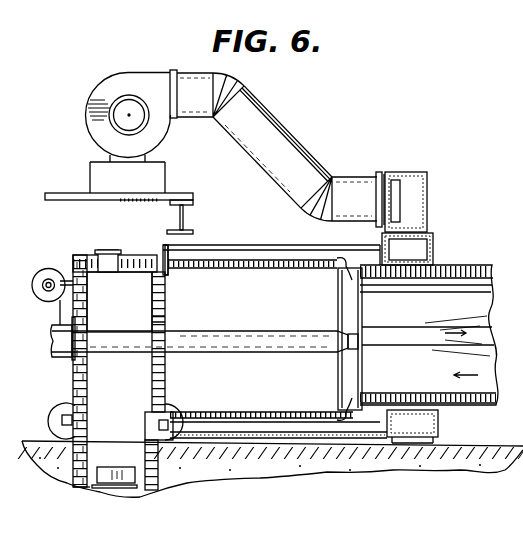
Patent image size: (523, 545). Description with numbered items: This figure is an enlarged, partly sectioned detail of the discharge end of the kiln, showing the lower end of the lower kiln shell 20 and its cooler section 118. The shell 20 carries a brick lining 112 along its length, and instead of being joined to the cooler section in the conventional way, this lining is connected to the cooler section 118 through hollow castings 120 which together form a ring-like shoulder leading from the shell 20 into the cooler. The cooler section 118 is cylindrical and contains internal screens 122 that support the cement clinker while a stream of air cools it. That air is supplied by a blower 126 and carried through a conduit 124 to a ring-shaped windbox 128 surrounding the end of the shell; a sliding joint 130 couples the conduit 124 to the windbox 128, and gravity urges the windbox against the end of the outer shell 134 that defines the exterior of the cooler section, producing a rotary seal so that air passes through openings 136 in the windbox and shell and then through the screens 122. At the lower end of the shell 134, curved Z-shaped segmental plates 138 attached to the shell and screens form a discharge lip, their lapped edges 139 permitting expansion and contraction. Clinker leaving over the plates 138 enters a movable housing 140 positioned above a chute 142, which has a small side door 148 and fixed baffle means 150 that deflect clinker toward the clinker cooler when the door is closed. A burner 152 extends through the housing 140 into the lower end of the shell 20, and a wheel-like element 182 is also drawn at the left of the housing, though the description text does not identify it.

The lower kiln shell 20 is at (482, 268).
The brick lining 112 is at (186, 220).
The cooler section 118 is at (284, 240).
The hollow castings 120 is at (350, 278).
The internal screens 122 is at (252, 269).
The conduit 124 is at (300, 151).
The blower 126 is at (104, 80).
The windbox 128 is at (435, 252).
The sliding joint 130 is at (408, 172).
The outer shell 134 is at (237, 441).
The openings 136 is at (398, 420).
The segmental plates 138 is at (163, 284).
The edges 139 is at (158, 318).
The movable housing 140 is at (76, 257).
The chute 142 is at (90, 487).
The door 148 is at (112, 467).
The baffle means 150 is at (130, 489).
The burner 152 is at (288, 330).
The roller wheel 182 is at (50, 302).